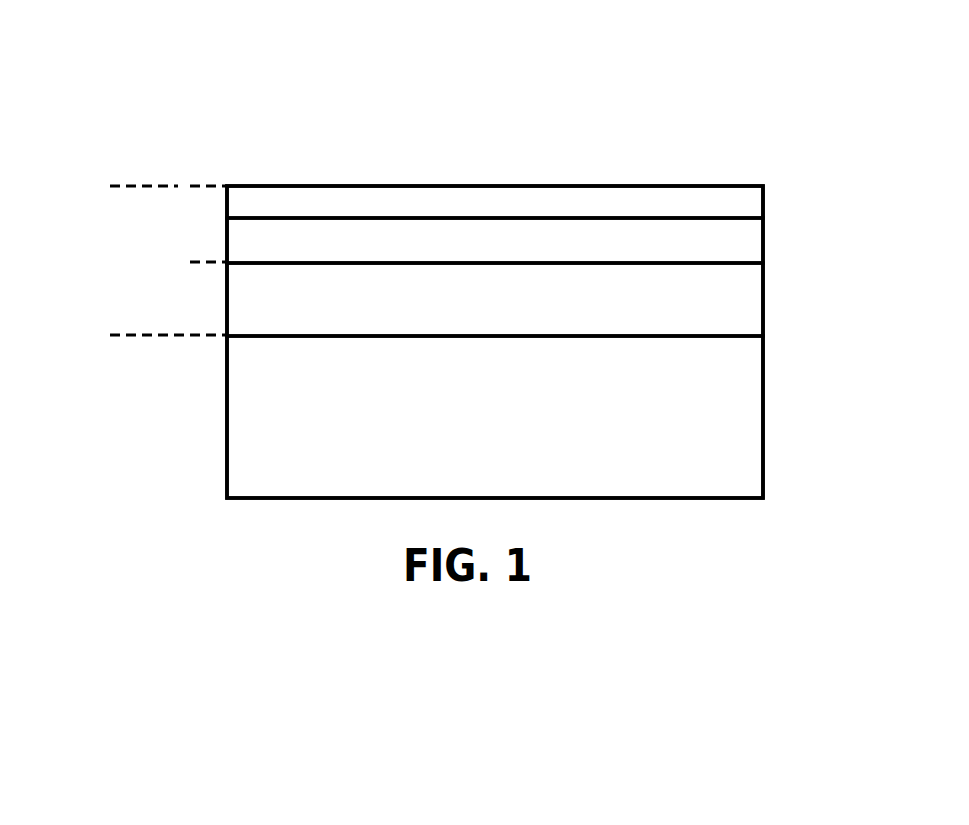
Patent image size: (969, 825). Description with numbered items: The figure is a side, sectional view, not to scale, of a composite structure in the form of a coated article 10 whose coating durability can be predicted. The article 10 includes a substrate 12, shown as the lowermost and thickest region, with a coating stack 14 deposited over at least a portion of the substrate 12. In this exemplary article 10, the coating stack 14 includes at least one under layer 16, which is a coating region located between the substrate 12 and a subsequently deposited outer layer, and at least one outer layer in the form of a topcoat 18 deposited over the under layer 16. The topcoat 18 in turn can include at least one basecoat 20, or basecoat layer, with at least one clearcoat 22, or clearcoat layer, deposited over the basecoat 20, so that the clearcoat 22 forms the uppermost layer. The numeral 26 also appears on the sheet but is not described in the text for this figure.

The coated article 10 is at (759, 142).
The substrate 12 is at (763, 398).
The coating stack 14 is at (110, 186).
The under layer 16 is at (763, 302).
The topcoat 18 is at (190, 186).
The basecoat 20 is at (763, 239).
The clearcoat 22 is at (763, 201).
The electrolyte 26 is at (290, 810).